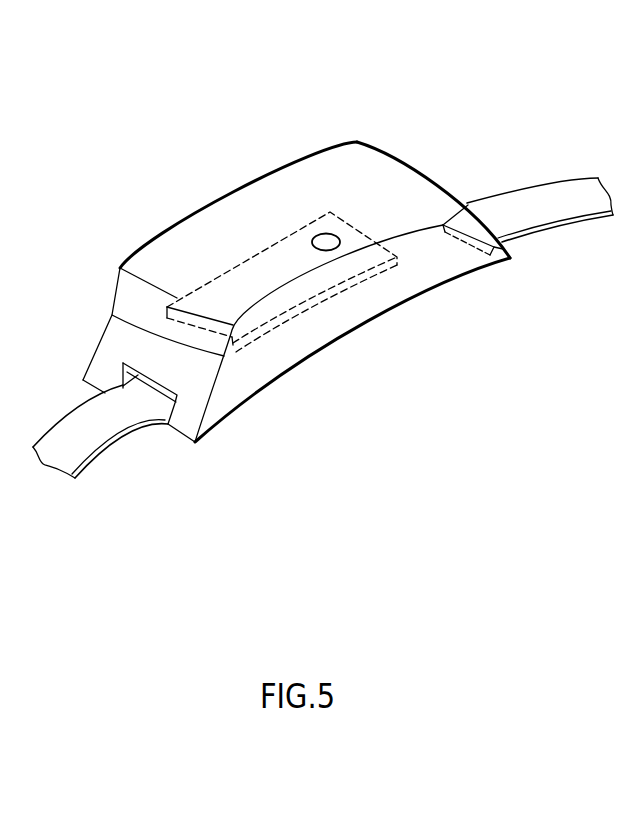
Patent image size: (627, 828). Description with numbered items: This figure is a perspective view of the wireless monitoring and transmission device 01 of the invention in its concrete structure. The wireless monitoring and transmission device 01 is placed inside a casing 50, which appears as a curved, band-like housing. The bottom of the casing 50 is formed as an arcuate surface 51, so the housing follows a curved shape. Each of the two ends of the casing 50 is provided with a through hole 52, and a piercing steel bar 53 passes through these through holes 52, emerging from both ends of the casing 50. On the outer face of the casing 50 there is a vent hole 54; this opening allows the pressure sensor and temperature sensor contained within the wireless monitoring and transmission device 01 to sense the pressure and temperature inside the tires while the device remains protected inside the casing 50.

The casing 50 is at (296, 246).
The arcuate surface 51 is at (423, 283).
The through hole 52 is at (145, 377).
The piercing steel bar 53 is at (113, 448).
The vent hole 54 is at (325, 233).
The wireless monitoring and transmission device 01 is at (352, 223).